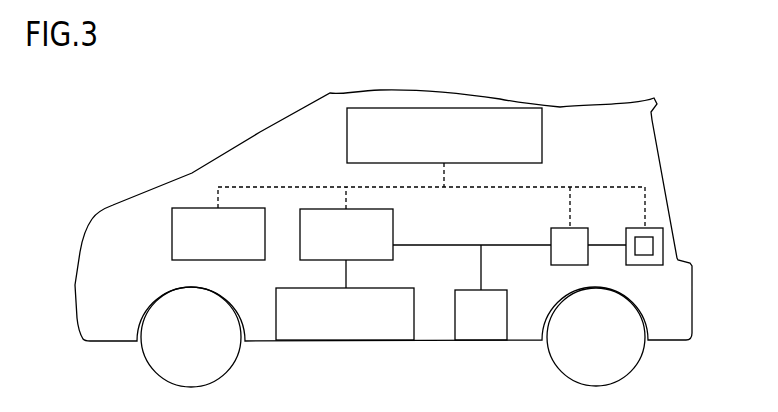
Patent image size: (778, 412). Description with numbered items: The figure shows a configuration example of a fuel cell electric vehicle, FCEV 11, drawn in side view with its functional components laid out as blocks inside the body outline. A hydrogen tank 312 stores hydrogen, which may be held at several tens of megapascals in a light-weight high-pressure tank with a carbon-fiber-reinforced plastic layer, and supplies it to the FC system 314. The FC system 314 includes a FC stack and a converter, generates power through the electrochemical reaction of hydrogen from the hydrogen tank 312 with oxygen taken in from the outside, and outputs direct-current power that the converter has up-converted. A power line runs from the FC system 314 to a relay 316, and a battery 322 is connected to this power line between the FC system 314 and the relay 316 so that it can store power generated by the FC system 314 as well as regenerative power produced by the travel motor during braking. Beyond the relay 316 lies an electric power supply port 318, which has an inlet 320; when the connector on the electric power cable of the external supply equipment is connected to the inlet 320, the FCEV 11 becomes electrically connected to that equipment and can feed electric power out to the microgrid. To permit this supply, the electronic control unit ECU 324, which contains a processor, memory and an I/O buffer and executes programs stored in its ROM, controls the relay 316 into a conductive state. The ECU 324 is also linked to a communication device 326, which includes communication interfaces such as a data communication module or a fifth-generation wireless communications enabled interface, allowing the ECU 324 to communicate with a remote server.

The FCEV 11 is at (560, 106).
The communication device 326 is at (347, 135).
The electronic control unit (ECU) 324 is at (172, 222).
The FC system (FCS) 314 is at (394, 222).
The hydrogen tank 312 is at (386, 288).
The battery 322 is at (488, 290).
The relay 316 is at (561, 228).
The electric power supply port 318 is at (655, 228).
The inlet 320 is at (660, 243).